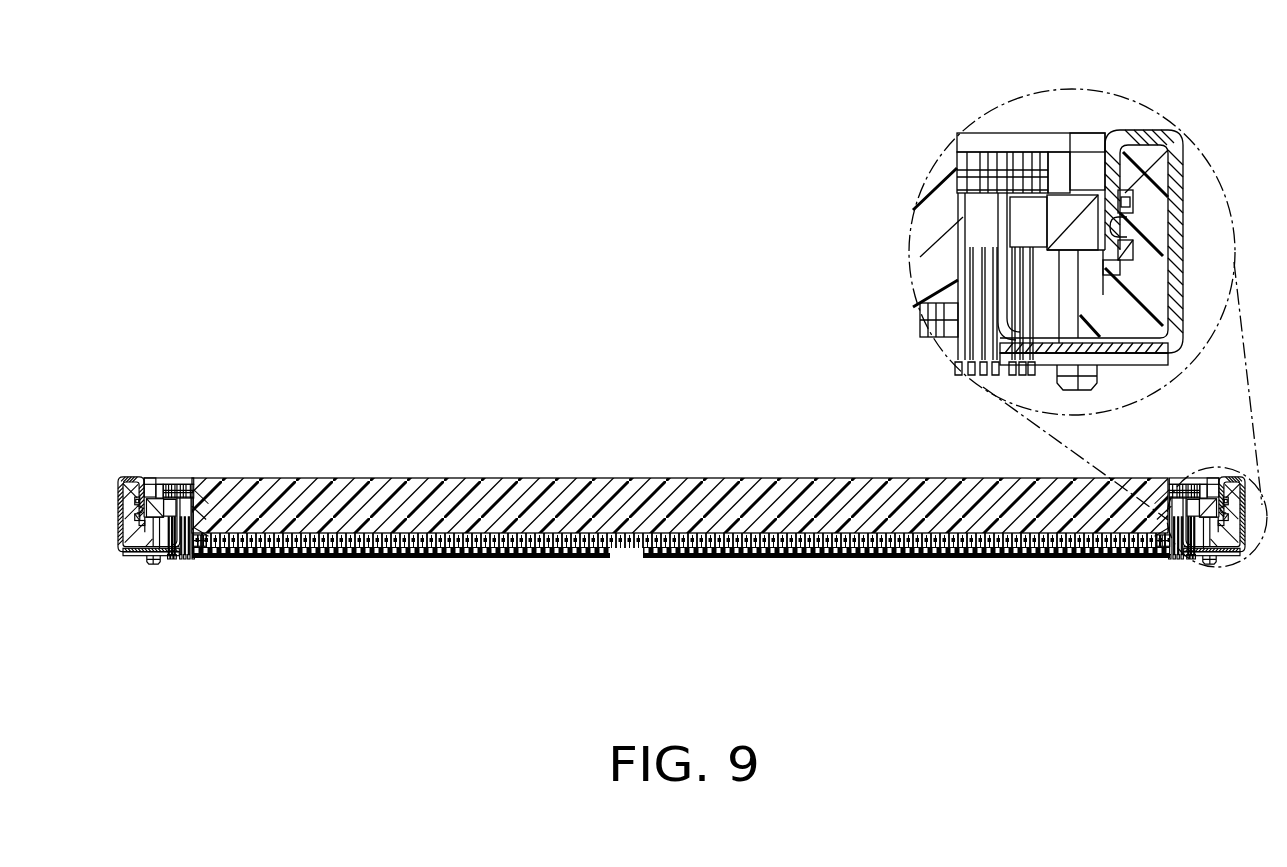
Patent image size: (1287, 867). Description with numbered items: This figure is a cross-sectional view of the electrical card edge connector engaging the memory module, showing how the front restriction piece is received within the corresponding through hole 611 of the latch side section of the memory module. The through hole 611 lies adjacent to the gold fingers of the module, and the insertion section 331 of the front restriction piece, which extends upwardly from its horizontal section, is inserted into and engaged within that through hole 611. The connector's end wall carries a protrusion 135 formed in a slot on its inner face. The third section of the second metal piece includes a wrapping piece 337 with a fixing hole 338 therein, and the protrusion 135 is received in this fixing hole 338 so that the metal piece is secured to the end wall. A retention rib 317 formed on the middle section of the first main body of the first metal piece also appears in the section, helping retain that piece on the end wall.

The through hole 611 is at (1027, 215).
The insertion section 331 is at (1007, 218).
The fixing hole 338 is at (1107, 207).
The wrapping piece 337 is at (1132, 205).
The retention rib 317 is at (1178, 175).
The protrusion 135 is at (1120, 227).